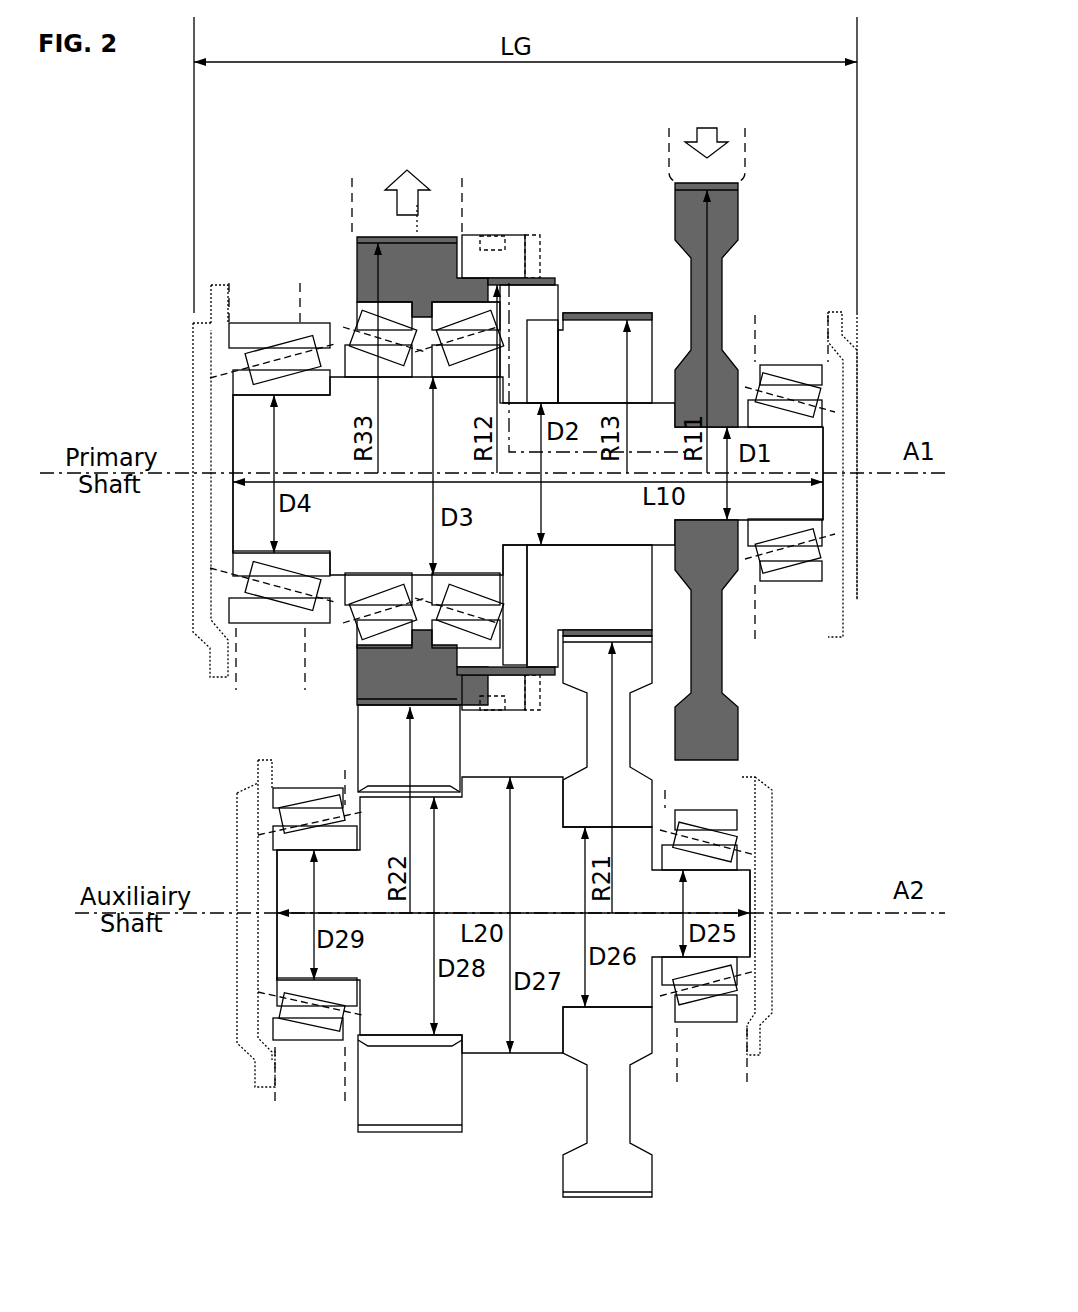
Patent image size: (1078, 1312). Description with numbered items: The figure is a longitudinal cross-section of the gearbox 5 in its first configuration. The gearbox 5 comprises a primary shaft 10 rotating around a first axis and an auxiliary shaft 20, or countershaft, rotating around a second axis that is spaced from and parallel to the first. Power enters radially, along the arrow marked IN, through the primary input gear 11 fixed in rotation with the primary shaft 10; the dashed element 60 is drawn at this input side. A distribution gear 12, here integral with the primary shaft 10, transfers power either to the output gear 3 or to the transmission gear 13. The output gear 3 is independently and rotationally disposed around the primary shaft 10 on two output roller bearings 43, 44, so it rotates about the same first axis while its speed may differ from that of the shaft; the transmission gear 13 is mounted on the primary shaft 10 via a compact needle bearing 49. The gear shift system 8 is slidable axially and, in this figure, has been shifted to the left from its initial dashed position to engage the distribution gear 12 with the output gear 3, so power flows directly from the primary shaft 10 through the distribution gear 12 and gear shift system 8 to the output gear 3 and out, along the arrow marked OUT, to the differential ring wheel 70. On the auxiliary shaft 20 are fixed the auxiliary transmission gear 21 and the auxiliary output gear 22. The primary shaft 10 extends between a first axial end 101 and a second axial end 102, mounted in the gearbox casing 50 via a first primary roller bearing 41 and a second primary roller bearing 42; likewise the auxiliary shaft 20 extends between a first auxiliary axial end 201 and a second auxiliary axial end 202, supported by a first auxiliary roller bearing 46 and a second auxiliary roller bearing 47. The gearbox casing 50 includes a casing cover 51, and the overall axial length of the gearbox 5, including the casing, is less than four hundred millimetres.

The output gear 3 is at (357, 265).
The gearbox 5 is at (930, 214).
The gear shift system 8 is at (510, 232).
The primary shaft 10 is at (825, 447).
The primary input gear 11 is at (740, 222).
The distribution gear 12 is at (552, 285).
The transmission gear 13 is at (598, 320).
The auxiliary shaft 20 is at (745, 900).
The auxiliary transmission gear 21 is at (590, 718).
The auxiliary output gear 22 is at (360, 730).
The first primary roller bearing 41 is at (820, 380).
The second primary roller bearing 42 is at (235, 335).
The output roller bearing 43 is at (478, 372).
The output roller bearing 44 is at (372, 322).
The first auxiliary roller bearing 46 is at (725, 808).
The second auxiliary roller bearing 47 is at (288, 800).
The needle bearing 49 is at (548, 402).
The gearbox casing 50 is at (212, 292).
The casing cover 51 is at (238, 830).
The input connection 60 is at (745, 142).
The differential ring wheel 70 is at (352, 180).
The first axial end 101 is at (825, 500).
The second axial end 102 is at (233, 518).
The first auxiliary axial end 201 is at (752, 932).
The second auxiliary axial end 202 is at (277, 940).